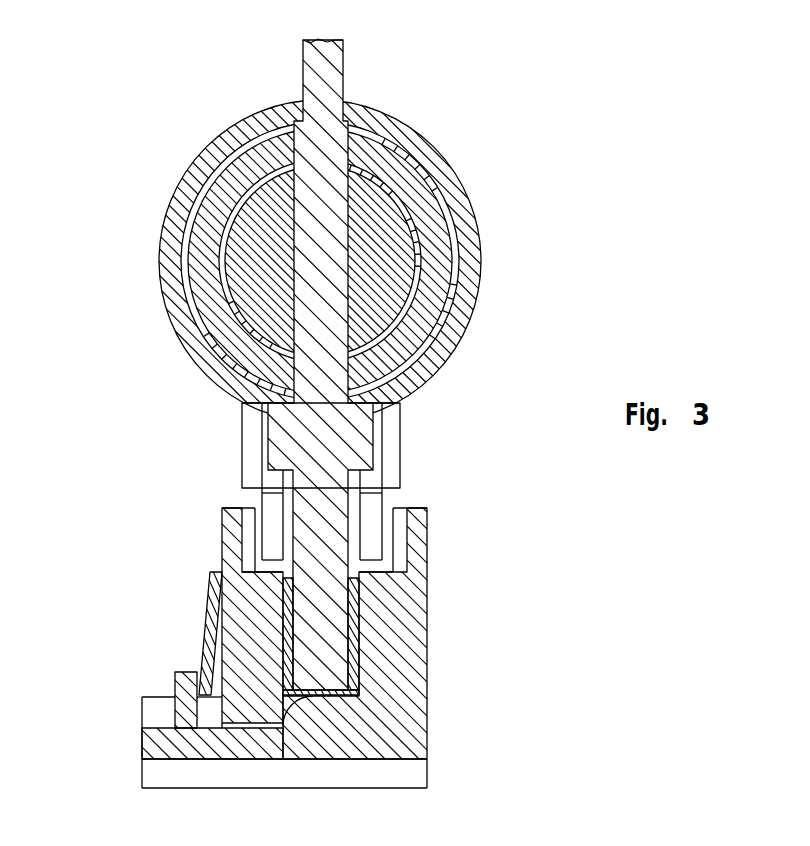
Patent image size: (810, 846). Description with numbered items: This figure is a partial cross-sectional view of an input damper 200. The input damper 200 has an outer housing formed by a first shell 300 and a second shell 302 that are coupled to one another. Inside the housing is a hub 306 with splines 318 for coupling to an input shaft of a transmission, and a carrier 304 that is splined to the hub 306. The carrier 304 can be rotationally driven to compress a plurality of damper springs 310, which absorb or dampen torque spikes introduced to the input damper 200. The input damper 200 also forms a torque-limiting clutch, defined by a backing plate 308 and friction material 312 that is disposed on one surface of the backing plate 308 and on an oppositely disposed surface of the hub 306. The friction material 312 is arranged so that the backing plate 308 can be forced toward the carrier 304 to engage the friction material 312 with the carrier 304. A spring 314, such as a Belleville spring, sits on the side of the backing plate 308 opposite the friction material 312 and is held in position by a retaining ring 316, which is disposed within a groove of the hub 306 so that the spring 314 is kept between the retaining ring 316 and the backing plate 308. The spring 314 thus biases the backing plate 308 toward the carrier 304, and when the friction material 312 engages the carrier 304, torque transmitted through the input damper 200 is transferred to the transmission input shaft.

The input damper 200 is at (478, 100).
The first shell 300 is at (158, 257).
The second shell 302 is at (482, 261).
The carrier 304 is at (358, 436).
The hub 306 is at (400, 528).
The backing plate 308 is at (242, 553).
The damper springs 310 is at (257, 153).
The friction material 312 is at (362, 650).
The spring 314 is at (208, 618).
The retaining ring 316 is at (180, 677).
The splines 318 is at (412, 774).